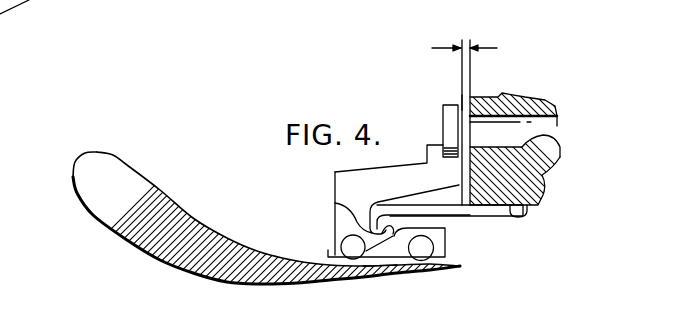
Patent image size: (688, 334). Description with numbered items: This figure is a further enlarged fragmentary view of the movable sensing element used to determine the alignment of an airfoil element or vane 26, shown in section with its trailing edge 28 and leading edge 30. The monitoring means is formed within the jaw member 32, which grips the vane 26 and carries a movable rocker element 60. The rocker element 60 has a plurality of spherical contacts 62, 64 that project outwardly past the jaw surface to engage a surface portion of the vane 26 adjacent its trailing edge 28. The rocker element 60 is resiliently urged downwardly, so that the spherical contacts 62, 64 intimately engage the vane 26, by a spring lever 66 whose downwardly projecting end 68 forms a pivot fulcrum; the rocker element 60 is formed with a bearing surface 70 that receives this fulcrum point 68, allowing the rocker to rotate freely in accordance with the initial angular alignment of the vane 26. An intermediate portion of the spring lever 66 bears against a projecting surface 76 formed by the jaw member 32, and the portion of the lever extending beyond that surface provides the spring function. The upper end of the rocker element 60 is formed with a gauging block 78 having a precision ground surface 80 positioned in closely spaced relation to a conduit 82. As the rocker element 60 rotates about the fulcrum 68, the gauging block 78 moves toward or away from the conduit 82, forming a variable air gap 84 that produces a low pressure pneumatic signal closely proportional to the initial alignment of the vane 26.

The vane 26 is at (131, 171).
The trailing edge 28 is at (385, 279).
The leading edge 30 is at (82, 157).
The jaw member 32 is at (528, 99).
The rocker element 60 is at (343, 186).
The spherical contact 62 is at (342, 233).
The spherical contact 64 is at (427, 248).
The spring lever 66 is at (495, 210).
The downwardly projecting end 68 is at (336, 204).
The bearing surface 70 is at (393, 234).
The projecting surface 76 is at (524, 213).
The gauging block 78 is at (443, 113).
The precision ground surface 80 is at (467, 103).
The conduit 82 is at (556, 139).
The variable air gap 84 is at (468, 41).